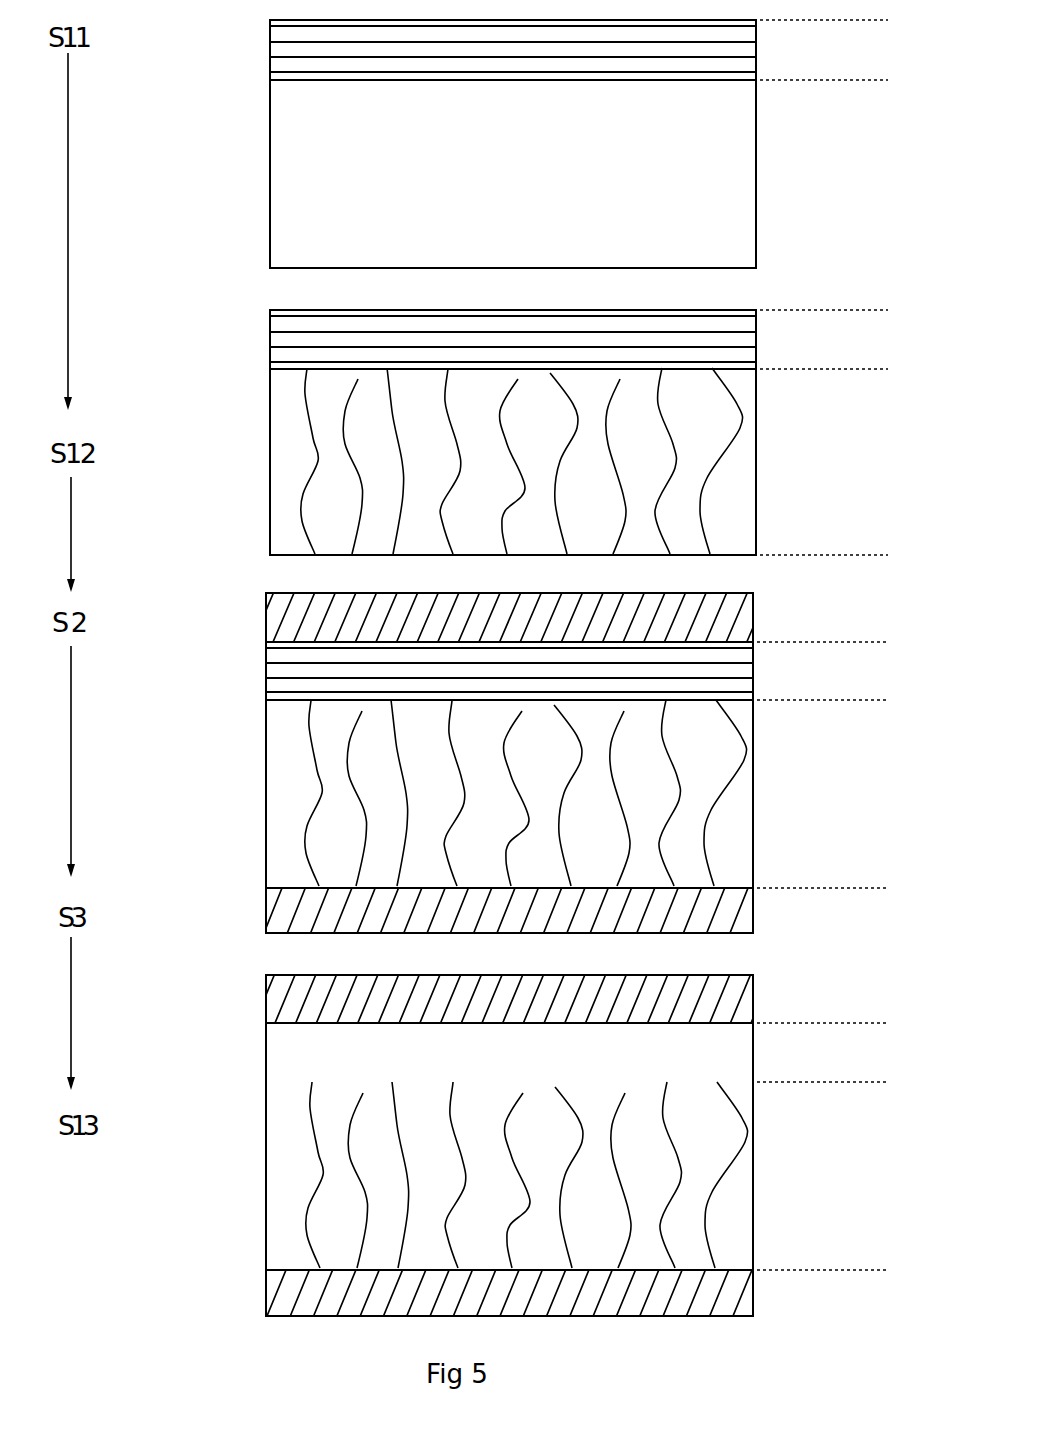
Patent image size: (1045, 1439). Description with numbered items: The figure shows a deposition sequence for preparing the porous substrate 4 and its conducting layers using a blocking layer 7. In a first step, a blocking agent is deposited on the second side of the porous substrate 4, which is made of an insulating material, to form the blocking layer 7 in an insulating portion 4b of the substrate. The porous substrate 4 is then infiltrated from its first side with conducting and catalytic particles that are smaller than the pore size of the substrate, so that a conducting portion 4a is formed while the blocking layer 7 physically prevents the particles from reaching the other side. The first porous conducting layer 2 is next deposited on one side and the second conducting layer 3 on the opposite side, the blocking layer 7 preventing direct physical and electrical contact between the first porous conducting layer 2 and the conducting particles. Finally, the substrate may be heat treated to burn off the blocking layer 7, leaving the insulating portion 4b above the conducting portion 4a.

The first porous conducting layer 2 is at (254, 615).
The second conducting layer 3 is at (254, 908).
The porous substrate 4 is at (258, 143).
The conducting portion 4a is at (805, 382).
The insulating portion 4b is at (850, 32).
The blocking layer 7 is at (258, 53).